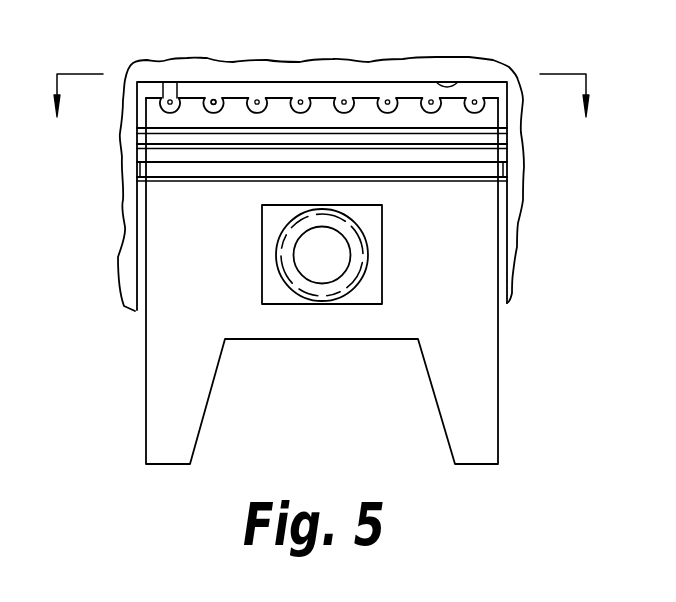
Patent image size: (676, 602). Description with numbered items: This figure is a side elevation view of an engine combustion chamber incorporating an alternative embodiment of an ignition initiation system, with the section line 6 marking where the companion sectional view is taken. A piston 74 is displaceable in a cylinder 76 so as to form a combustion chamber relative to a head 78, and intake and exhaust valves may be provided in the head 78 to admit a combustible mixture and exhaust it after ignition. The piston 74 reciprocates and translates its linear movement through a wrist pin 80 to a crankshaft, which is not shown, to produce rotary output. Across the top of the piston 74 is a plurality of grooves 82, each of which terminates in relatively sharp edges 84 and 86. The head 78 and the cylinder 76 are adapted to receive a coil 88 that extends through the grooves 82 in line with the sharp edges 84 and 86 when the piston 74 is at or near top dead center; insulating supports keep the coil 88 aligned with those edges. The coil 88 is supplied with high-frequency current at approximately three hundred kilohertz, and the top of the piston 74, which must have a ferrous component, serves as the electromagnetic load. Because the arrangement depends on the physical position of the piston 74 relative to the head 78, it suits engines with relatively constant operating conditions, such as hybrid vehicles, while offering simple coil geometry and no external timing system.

The section line 6- 6 is at (321, 77).
The piston 74 is at (497, 333).
The cylinder 76 is at (512, 216).
The head 78 is at (464, 82).
The wrist pin 80 is at (300, 294).
The grooves 82 is at (168, 113).
The sharp edge 84 is at (163, 82).
The sharp edge 86 is at (177, 82).
The coil 88 is at (213, 93).